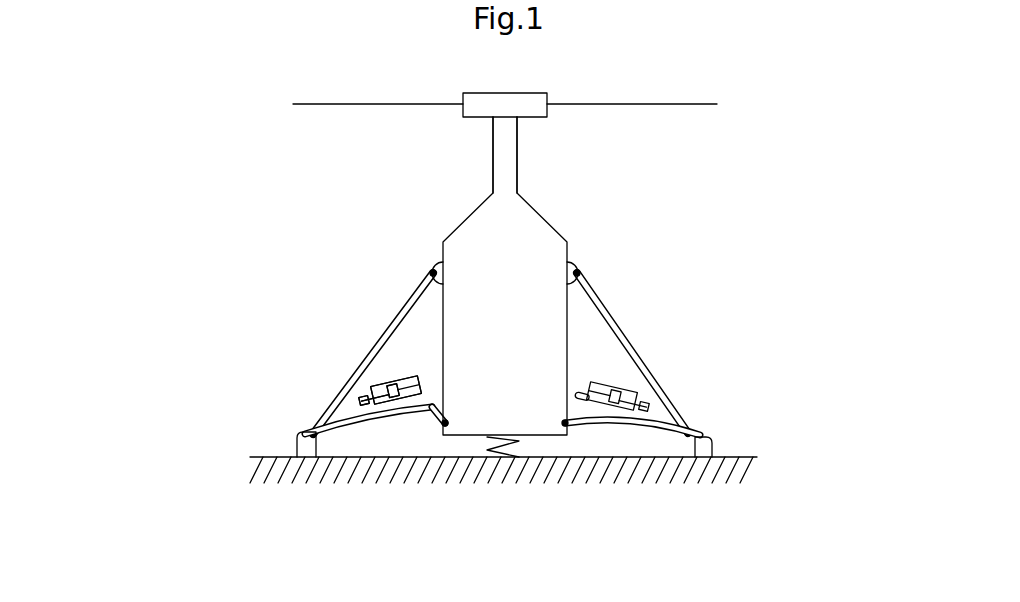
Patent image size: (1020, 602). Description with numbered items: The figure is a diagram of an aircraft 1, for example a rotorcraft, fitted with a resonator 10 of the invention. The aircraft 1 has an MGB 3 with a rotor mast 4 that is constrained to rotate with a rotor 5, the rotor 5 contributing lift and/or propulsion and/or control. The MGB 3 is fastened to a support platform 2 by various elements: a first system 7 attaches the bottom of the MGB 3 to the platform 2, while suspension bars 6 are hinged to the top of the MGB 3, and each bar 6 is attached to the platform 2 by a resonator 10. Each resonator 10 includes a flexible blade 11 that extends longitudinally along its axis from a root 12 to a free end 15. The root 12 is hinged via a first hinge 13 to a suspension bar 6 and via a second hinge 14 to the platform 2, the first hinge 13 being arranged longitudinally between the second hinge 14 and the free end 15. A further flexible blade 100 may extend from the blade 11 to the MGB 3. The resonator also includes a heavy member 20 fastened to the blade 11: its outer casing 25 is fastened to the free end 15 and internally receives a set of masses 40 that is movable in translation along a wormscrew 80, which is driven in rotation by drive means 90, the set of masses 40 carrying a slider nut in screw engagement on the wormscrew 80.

The aircraft 1 is at (796, 154).
The support platform 2 is at (742, 457).
The MGB 3 is at (513, 381).
The rotor mast 4 is at (517, 142).
The rotor 5 is at (605, 54).
The suspension bar 6 is at (386, 328).
The first system 7 is at (530, 445).
The resonator 10 is at (400, 442).
The flexible blade 11 is at (372, 440).
The root 12 is at (309, 417).
The first hinge 13 is at (333, 418).
The second hinge 14 is at (296, 442).
The free end 15 is at (437, 426).
The heavy member 20 is at (376, 372).
The outer casing 25 is at (410, 382).
The set of masses 40 is at (403, 382).
The wormscrew 80 is at (383, 380).
The drive means 90 is at (367, 398).
The flexible blade 100 is at (415, 430).